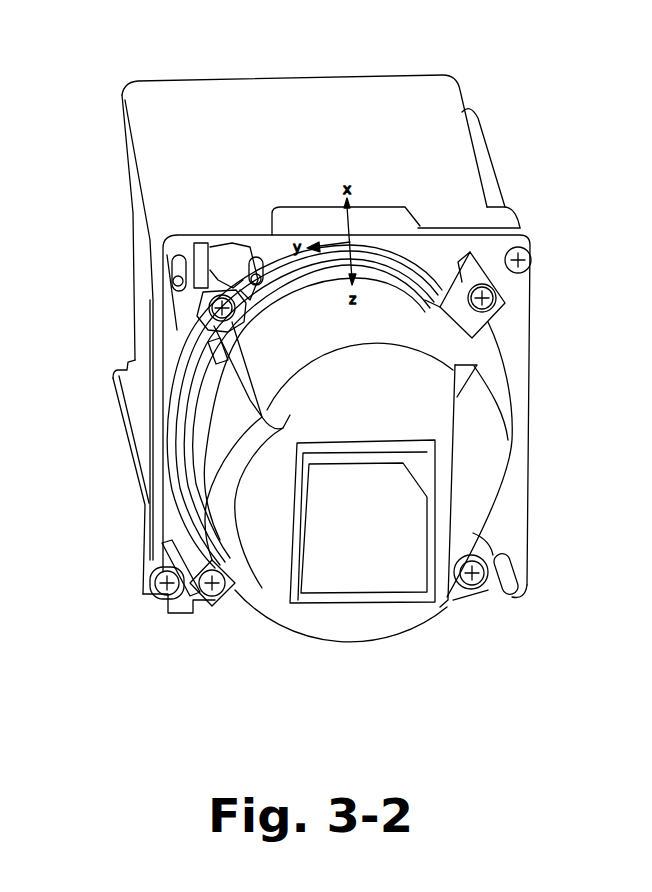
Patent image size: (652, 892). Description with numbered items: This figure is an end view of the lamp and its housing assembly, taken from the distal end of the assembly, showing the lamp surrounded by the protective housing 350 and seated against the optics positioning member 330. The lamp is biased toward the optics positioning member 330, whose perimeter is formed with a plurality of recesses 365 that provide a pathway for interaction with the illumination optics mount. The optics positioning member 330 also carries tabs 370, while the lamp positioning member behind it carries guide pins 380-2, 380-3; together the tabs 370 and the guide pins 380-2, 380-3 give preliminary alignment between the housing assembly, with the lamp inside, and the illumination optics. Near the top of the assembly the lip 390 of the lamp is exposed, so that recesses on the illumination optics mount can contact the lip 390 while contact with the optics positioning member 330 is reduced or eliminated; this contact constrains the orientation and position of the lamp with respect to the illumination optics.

The optics positioning member 330 is at (392, 403).
The protective housing 350 is at (347, 137).
The recesses 365 is at (399, 265).
The tabs 370 is at (473, 330).
The guide pin 380-2 is at (256, 268).
The guide pin 380-3 is at (518, 595).
The lip 390 is at (385, 252).